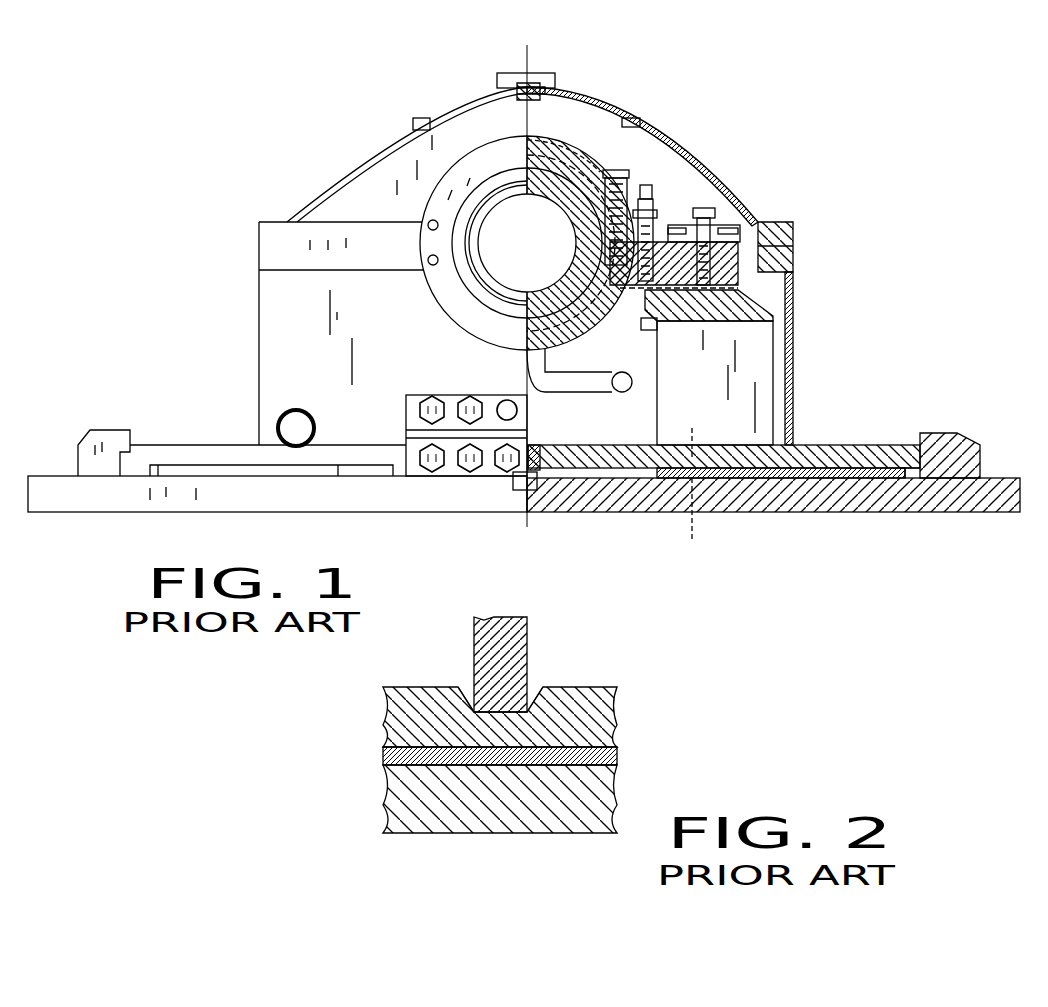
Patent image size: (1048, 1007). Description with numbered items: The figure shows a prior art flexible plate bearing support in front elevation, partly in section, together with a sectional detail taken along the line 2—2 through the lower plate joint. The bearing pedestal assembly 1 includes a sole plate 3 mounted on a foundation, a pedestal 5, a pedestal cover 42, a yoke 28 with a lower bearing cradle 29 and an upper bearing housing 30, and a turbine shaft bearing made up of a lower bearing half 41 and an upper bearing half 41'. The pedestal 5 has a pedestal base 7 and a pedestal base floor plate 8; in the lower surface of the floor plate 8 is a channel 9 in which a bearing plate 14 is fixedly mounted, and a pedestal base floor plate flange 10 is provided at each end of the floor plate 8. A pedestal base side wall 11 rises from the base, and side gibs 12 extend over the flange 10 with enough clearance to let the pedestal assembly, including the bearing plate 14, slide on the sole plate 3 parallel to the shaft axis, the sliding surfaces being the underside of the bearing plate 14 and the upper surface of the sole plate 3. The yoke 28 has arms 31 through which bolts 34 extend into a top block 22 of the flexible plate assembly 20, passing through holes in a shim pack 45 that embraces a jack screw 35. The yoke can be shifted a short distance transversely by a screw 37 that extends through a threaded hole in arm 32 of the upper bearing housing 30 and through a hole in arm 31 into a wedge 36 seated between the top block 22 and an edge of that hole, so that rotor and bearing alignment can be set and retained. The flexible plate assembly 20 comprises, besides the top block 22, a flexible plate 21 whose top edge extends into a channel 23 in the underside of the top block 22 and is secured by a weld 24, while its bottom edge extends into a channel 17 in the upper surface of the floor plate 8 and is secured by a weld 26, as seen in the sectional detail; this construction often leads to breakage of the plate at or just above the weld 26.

In FIG. 1, the bearing pedestal assembly 1 is at (788, 162).
In FIG. 1, the section line 2— 2 is at (692, 428).
In FIG. 1, the sole plate 3 is at (850, 512).
In FIG. 1, the pedestal 5 is at (808, 277).
In FIG. 1, the pedestal base 7 is at (798, 344).
In FIG. 1, the pedestal base floor plate 8 is at (570, 445).
In FIG. 2, the pedestal base floor plate 8 is at (586, 690).
In FIG. 1, the channel 9 is at (660, 478).
In FIG. 1, the pedestal base floor plate flange 10 is at (910, 470).
In FIG. 1, the pedestal base side wall 11 is at (800, 270).
In FIG. 1, the side gib 12 is at (962, 445).
In FIG. 1, the bearing plate 14 is at (818, 478).
In FIG. 2, the channel 17 is at (536, 690).
In FIG. 1, the flexible plate assembly 20 is at (646, 394).
In FIG. 2, the flexible plate assembly 20 is at (528, 623).
In FIG. 1, the flexible plate 21 is at (692, 412).
In FIG. 1, the top block 22 is at (725, 302).
In FIG. 1, the channel 23 is at (645, 324).
In FIG. 1, the weld 24 is at (660, 321).
In FIG. 2, the weld 26 is at (466, 690).
In FIG. 1, the yoke 28 is at (770, 240).
In FIG. 1, the lower bearing cradle 29 is at (542, 377).
In FIG. 1, the upper bearing housing 30 is at (578, 165).
In FIG. 1, the arm 31 is at (702, 218).
In FIG. 1, the arm 32 is at (688, 228).
In FIG. 1, the bolt 34 is at (772, 222).
In FIG. 1, the jack screw 35 is at (742, 230).
In FIG. 1, the wedge 36 is at (583, 332).
In FIG. 1, the screw 37 is at (648, 185).
In FIG. 1, the lower bearing half 41 is at (528, 243).
In FIG. 1, the upper bearing half 41' is at (567, 110).
In FIG. 1, the pedestal cover 42 is at (397, 140).
In FIG. 1, the shim pack 45 is at (744, 292).